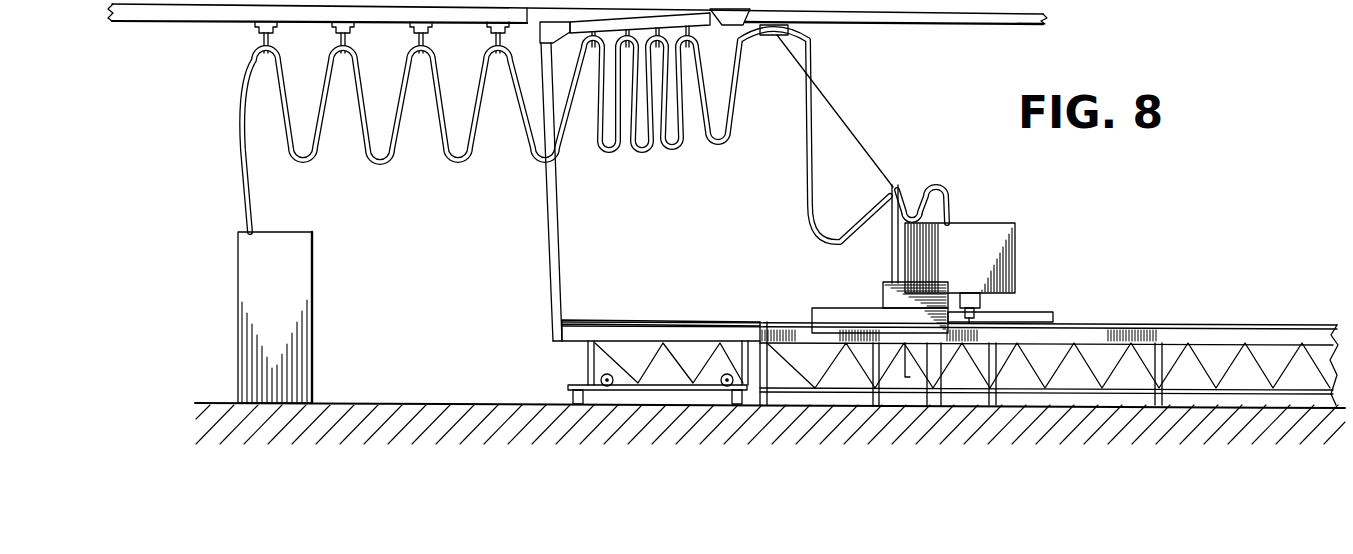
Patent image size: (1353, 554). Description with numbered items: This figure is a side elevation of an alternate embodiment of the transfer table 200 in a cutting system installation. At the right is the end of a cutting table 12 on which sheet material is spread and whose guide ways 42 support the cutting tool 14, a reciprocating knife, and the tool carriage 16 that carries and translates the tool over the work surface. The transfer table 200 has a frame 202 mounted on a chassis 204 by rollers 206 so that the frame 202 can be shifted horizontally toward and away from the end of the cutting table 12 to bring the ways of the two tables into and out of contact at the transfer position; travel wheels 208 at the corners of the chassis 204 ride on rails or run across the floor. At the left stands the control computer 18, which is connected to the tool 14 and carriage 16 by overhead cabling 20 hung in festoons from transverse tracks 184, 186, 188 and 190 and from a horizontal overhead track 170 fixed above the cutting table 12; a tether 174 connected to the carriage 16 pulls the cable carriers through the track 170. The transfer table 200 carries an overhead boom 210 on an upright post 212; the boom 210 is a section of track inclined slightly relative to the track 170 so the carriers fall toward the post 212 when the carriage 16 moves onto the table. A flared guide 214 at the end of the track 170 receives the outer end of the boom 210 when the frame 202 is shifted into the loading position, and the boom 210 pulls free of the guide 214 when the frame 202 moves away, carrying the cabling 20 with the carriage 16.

The cutting table 12 is at (1210, 320).
The cutting tool 14 is at (975, 320).
The tool carriage 16 is at (995, 247).
The control computer 18 is at (313, 272).
The overhead cabling 20 is at (388, 167).
The guide ways 42 is at (1100, 323).
The overhead track 170 is at (923, 24).
The tether 174 is at (850, 130).
The transverse track 184 is at (256, 30).
The transverse track 186 is at (337, 30).
The transverse track 188 is at (413, 30).
The transverse track 190 is at (487, 30).
The transfer table 200 is at (628, 308).
The frame 202 is at (665, 337).
The chassis 204 is at (648, 392).
The rollers 206 is at (603, 377).
The travel wheels 208 is at (573, 396).
The overhead boom 210 is at (638, 20).
The upright post 212 is at (553, 203).
The flared coupling or guide 214 is at (725, 25).